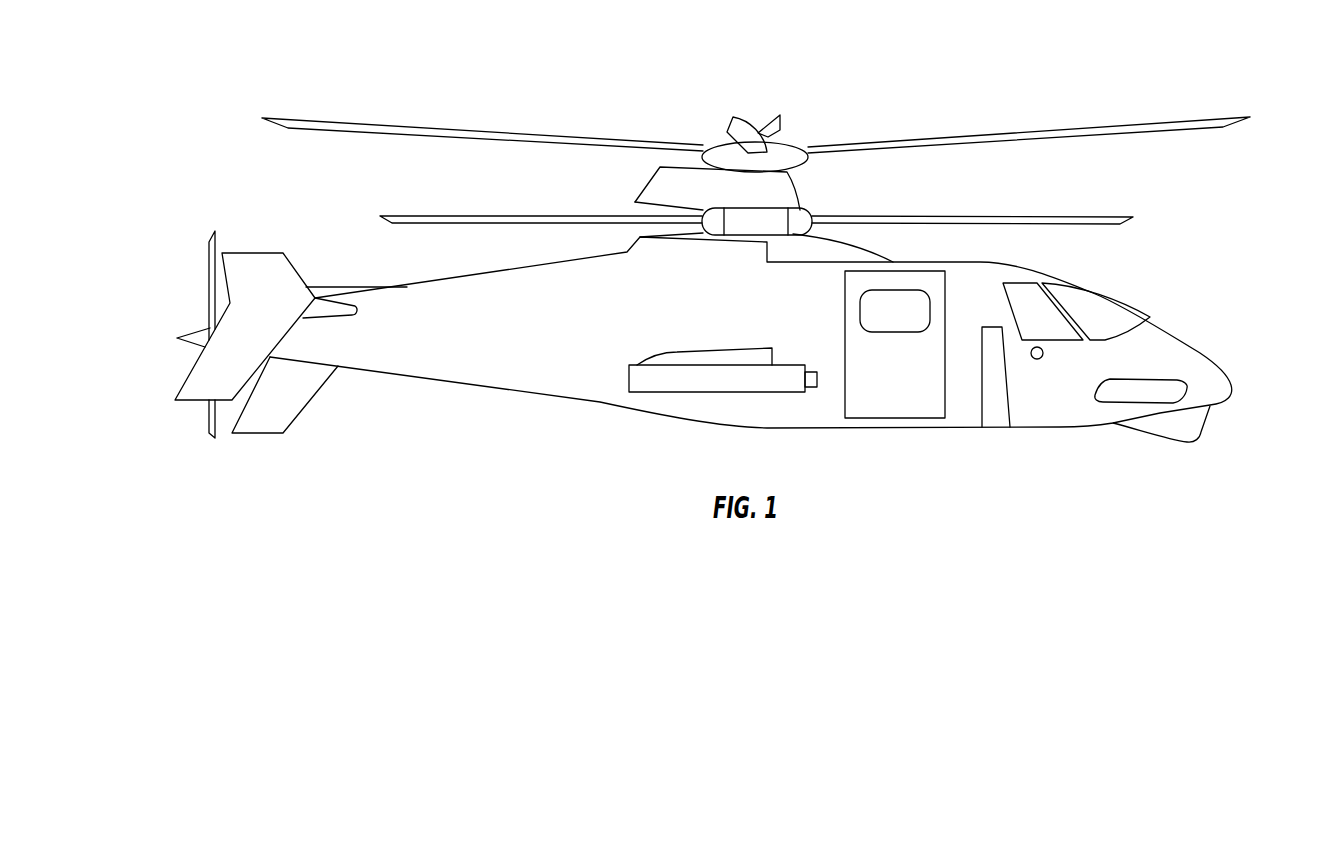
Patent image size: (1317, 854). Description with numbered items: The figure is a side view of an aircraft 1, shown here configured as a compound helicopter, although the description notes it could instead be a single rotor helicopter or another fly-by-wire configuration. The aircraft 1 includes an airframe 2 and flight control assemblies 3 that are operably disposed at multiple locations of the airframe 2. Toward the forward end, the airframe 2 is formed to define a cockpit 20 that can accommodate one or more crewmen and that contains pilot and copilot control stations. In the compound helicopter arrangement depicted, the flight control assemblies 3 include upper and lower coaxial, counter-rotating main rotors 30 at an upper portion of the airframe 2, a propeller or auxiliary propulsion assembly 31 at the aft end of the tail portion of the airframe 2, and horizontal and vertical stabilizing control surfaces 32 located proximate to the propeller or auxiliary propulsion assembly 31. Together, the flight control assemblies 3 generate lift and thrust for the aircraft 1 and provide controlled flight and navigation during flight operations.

The aircraft 1 is at (1217, 407).
The airframe 2 is at (557, 320).
The flight control assemblies 3 is at (217, 240).
The cockpit 20 is at (1107, 320).
The upper and lower coaxial, counter-rotating main rotors 30 is at (982, 220).
The propeller or auxiliary propulsion assembly 31 is at (200, 338).
The horizontal and vertical stabilizing control surfaces 32 is at (265, 323).